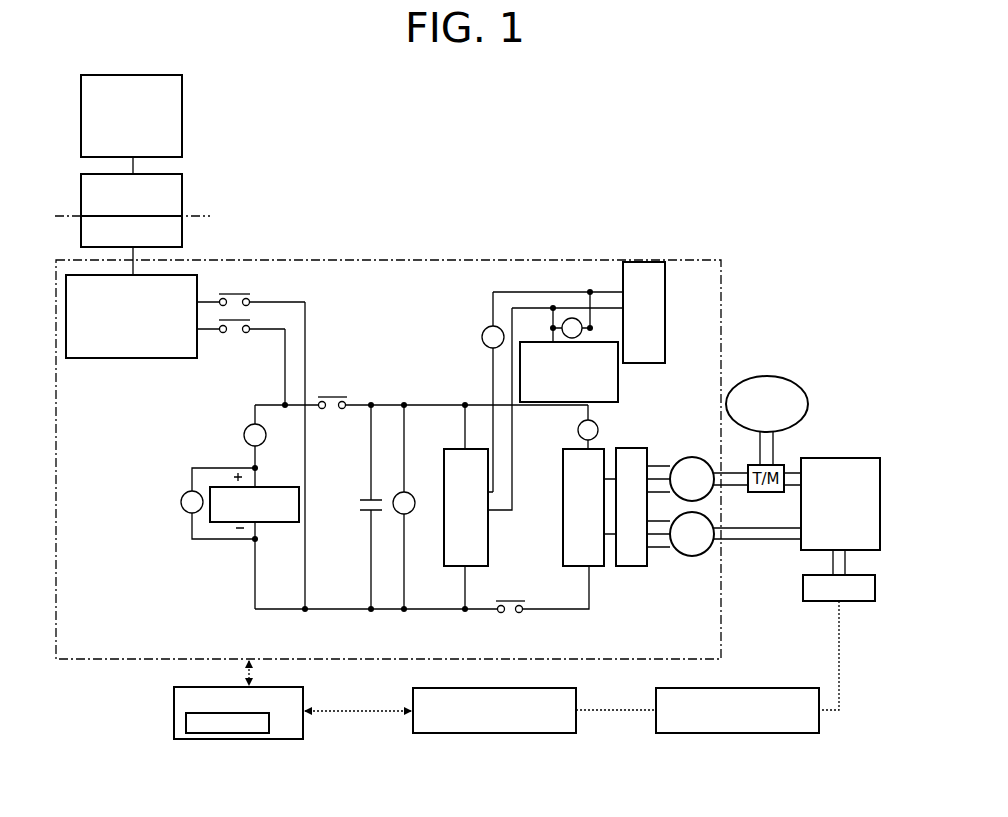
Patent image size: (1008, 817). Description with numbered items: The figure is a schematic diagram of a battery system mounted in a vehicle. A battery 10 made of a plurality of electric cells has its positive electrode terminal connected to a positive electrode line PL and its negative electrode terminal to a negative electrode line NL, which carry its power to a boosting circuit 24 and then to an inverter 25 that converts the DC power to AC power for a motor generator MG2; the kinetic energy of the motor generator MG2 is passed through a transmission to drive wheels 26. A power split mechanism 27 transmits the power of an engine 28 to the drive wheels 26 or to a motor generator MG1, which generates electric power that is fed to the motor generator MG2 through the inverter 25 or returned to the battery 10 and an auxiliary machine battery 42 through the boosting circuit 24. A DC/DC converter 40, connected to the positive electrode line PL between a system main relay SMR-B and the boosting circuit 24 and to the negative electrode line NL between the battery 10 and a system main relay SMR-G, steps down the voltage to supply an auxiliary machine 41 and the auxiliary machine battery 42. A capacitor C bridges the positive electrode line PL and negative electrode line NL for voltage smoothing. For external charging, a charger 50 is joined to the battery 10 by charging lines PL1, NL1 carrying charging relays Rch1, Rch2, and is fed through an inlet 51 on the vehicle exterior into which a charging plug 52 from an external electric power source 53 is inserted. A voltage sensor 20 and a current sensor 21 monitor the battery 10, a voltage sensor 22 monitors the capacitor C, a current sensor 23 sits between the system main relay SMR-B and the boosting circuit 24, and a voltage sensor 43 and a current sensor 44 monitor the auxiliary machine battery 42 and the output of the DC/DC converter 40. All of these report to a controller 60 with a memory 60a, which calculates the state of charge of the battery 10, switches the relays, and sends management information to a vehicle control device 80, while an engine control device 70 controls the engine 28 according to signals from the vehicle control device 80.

The battery 10 is at (291, 524).
The voltage sensor 20 is at (185, 490).
The current sensor 21 is at (249, 428).
The voltage sensor 22 is at (409, 492).
The current sensor 23 is at (577, 430).
The boosting circuit 24 is at (594, 447).
The inverter 25 is at (631, 447).
The drive wheels 26 is at (766, 376).
The power split mechanism 27 is at (834, 455).
The engine 28 is at (802, 590).
The DC/DC converter 40 is at (450, 447).
The auxiliary machine 41 is at (666, 315).
The auxiliary machine battery 42 is at (619, 390).
The voltage sensor 43 is at (553, 335).
The current sensor 44 is at (481, 337).
The charger 50 is at (150, 359).
The inlet 51 is at (183, 233).
The charging plug 52 is at (183, 196).
The external electric power source 53 is at (183, 118).
The controller 60 is at (212, 713).
The memory 60a is at (185, 725).
The engine control device 70 is at (737, 735).
The vehicle control device 80 is at (494, 735).
The positive electrode line PL is at (268, 402).
The negative electrode line NL is at (268, 612).
The charging line PL1 is at (285, 342).
The charging line NL1 is at (305, 316).
The capacitor C is at (367, 497).
The system main relay SMR-B is at (332, 395).
The system main relay SMR-G is at (510, 615).
The charging relay Rch1 is at (236, 336).
The charging relay Rch2 is at (237, 287).
The motor generator MG1 is at (680, 534).
The motor generator MG2 is at (680, 479).